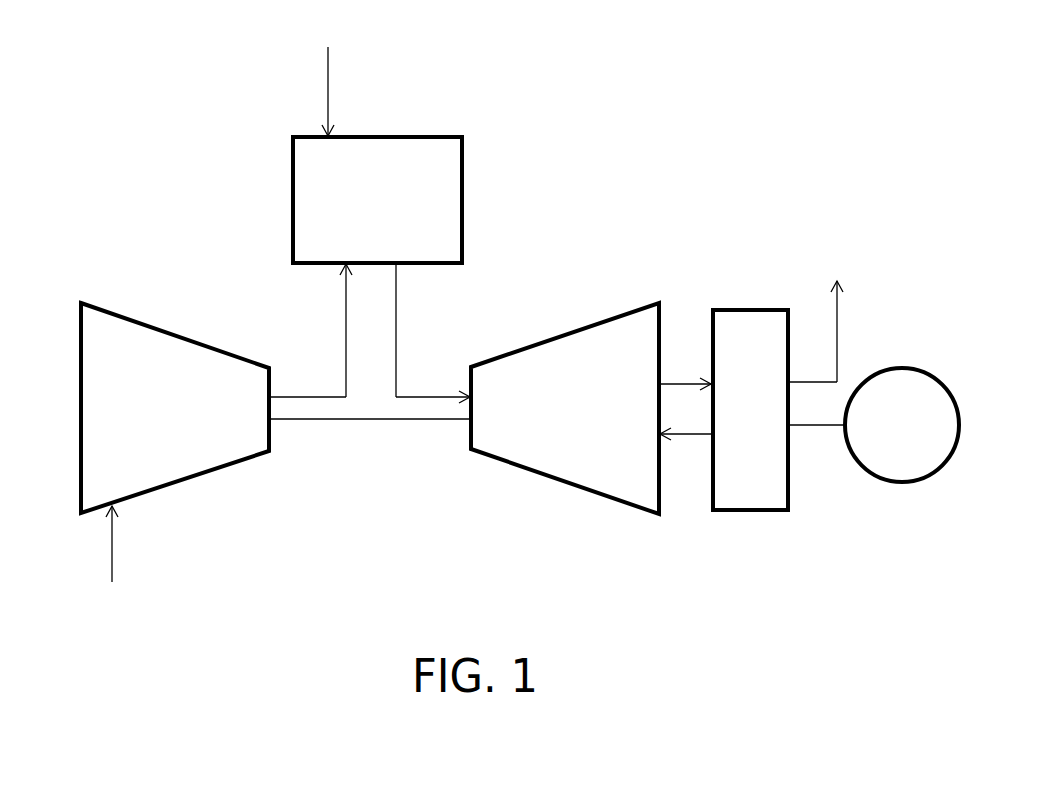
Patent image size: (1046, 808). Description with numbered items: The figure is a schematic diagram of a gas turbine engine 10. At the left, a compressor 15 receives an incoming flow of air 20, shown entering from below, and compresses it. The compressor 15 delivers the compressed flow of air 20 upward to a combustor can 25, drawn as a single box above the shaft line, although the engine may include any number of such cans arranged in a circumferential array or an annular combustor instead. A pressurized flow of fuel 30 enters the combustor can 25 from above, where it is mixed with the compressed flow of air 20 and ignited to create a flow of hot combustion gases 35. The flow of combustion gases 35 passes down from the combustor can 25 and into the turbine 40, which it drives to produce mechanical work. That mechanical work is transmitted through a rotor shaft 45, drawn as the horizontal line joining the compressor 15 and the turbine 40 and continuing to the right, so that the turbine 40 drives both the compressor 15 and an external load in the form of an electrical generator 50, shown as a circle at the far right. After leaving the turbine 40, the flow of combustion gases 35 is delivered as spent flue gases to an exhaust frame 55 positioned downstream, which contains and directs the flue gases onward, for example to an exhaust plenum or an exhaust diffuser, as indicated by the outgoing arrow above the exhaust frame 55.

The gas turbine engine 10 is at (168, 165).
The compressor 15 is at (135, 417).
The flow of air 20 is at (112, 540).
The combustor cans 25 is at (359, 214).
The flow of fuel 30 is at (328, 77).
The flow of hot combustion gases 35 is at (425, 395).
The turbine 40 is at (553, 417).
The rotor shaft 45 is at (390, 420).
The electrical generator 50 is at (880, 439).
The exhaust frame 55 is at (730, 417).